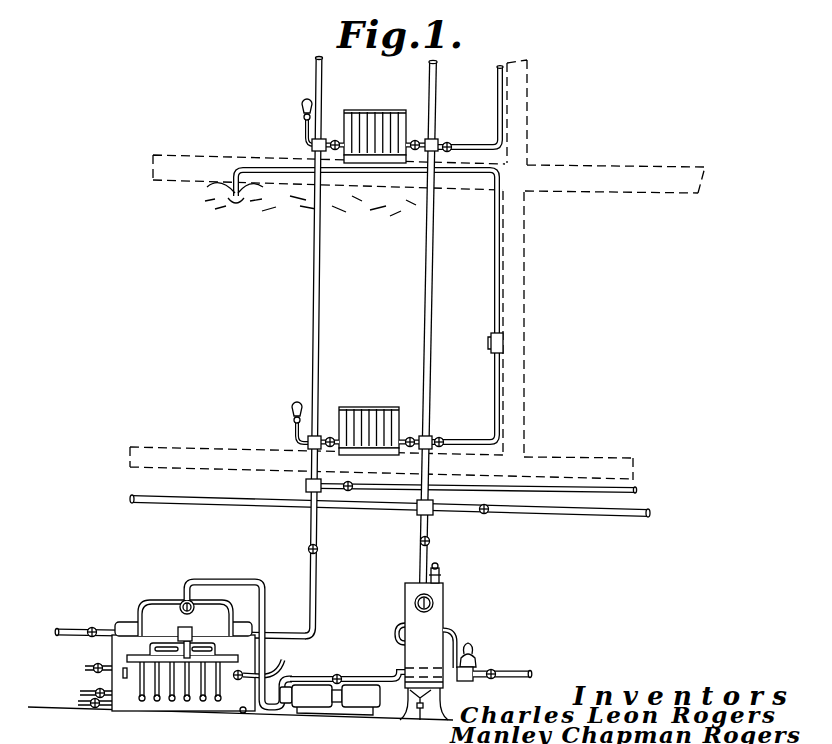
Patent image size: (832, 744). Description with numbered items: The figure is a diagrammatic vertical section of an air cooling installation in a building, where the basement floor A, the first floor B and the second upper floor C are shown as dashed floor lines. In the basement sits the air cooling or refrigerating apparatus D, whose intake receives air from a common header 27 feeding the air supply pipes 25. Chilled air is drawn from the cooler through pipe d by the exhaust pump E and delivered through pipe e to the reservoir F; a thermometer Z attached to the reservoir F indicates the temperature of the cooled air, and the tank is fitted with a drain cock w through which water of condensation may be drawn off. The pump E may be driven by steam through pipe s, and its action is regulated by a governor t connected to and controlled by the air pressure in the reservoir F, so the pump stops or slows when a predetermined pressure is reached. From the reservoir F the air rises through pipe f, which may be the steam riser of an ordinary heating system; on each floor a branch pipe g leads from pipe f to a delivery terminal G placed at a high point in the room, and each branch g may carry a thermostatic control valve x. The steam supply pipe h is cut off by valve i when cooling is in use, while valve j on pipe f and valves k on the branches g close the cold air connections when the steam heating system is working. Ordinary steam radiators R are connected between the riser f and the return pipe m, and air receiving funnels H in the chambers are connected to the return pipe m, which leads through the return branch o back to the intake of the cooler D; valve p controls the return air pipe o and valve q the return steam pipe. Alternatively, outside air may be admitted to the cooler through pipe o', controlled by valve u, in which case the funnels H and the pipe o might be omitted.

The basement floor A is at (240, 725).
The first floor B is at (181, 447).
The second upper floor C is at (185, 158).
The air cooling or refrigerating apparatus D is at (180, 647).
The exhaust pump E is at (312, 694).
The reservoir F is at (437, 613).
The delivery terminal G is at (310, 206).
The air receiving funnel H is at (301, 107).
The steam radiator R is at (362, 109).
The thermometer Z is at (398, 630).
The pipe d is at (233, 585).
The pipe e is at (366, 677).
The pipe f is at (428, 267).
The branch pipe g is at (288, 174).
The steam supply pipe h is at (560, 512).
The valve i is at (483, 513).
The valve j is at (421, 543).
The valve k is at (447, 140).
The return pipe m is at (312, 305).
The return branch o is at (299, 533).
The pipe o' is at (168, 650).
The valve p is at (317, 549).
The valve q is at (348, 490).
The horizontal pipe r is at (527, 488).
The pipe s is at (521, 673).
The governor t is at (471, 652).
The valve u is at (90, 640).
The drain cock w is at (418, 708).
The thermostatic control valve x is at (489, 340).
The air supply pipe 25 is at (168, 700).
The header 27 is at (150, 648).